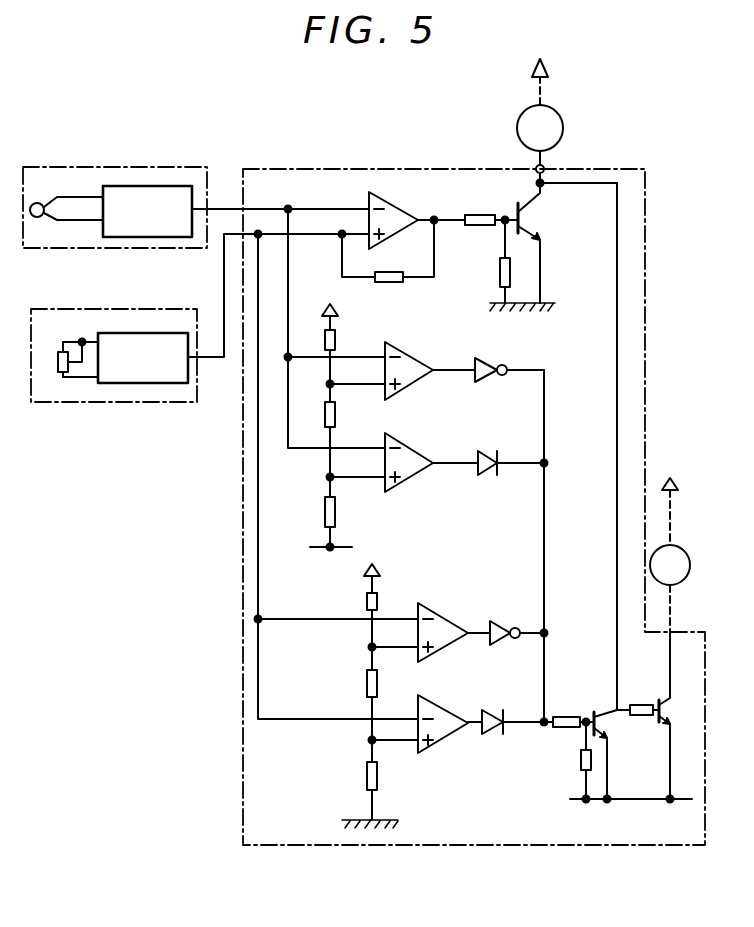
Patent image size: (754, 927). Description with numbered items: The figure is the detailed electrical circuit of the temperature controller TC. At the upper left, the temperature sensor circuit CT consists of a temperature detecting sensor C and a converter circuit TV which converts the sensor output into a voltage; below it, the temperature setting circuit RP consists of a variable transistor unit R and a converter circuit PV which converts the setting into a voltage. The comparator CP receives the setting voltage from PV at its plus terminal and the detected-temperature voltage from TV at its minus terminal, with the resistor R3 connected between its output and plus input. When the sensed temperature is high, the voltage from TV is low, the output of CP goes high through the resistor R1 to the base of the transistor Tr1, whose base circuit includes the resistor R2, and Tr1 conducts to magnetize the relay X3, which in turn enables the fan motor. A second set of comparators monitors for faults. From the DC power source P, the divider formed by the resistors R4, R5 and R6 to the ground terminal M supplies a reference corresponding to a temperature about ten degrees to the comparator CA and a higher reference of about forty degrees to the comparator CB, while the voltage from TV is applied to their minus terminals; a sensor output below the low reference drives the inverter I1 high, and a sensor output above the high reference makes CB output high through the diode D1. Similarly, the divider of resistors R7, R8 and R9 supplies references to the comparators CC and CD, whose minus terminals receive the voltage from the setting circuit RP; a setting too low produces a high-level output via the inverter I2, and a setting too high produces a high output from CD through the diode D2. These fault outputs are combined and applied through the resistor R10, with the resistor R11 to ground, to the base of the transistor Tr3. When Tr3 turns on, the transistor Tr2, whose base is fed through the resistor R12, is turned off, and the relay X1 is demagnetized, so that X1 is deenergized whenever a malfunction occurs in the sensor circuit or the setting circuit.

The temperature controller TC is at (492, 848).
The temperature sensor circuit CT is at (97, 173).
The temperature detecting sensor C is at (66, 196).
The converter circuit TV is at (147, 211).
The temperature setting circuit RP is at (97, 395).
The variable transistor unit R is at (74, 346).
The converter circuit PV is at (143, 358).
The comparator CP is at (398, 206).
The resistor R1 is at (466, 203).
The resistor R2 is at (499, 270).
The resistor R3 is at (386, 283).
The transistor Tr1 is at (545, 224).
The relay X3 is at (540, 128).
The relay X1 is at (670, 588).
The DC power source P is at (508, 325).
The ground terminal M is at (490, 674).
The resistor R4 is at (335, 343).
The resistor R5 is at (335, 416).
The resistor R6 is at (345, 522).
The comparator CA is at (424, 366).
The comparator CB is at (424, 457).
The inverter I1 is at (489, 368).
The diode D1 is at (487, 460).
The resistor R7 is at (367, 601).
The resistor R8 is at (367, 680).
The resistor R9 is at (367, 778).
The comparator CC is at (450, 622).
The comparator CD is at (450, 712).
The inverter I2 is at (502, 626).
The diode D2 is at (495, 716).
The resistor R10 is at (566, 715).
The resistor R11 is at (580, 762).
The resistor R12 is at (645, 694).
The transistor Tr2 is at (668, 712).
The transistor Tr3 is at (603, 724).